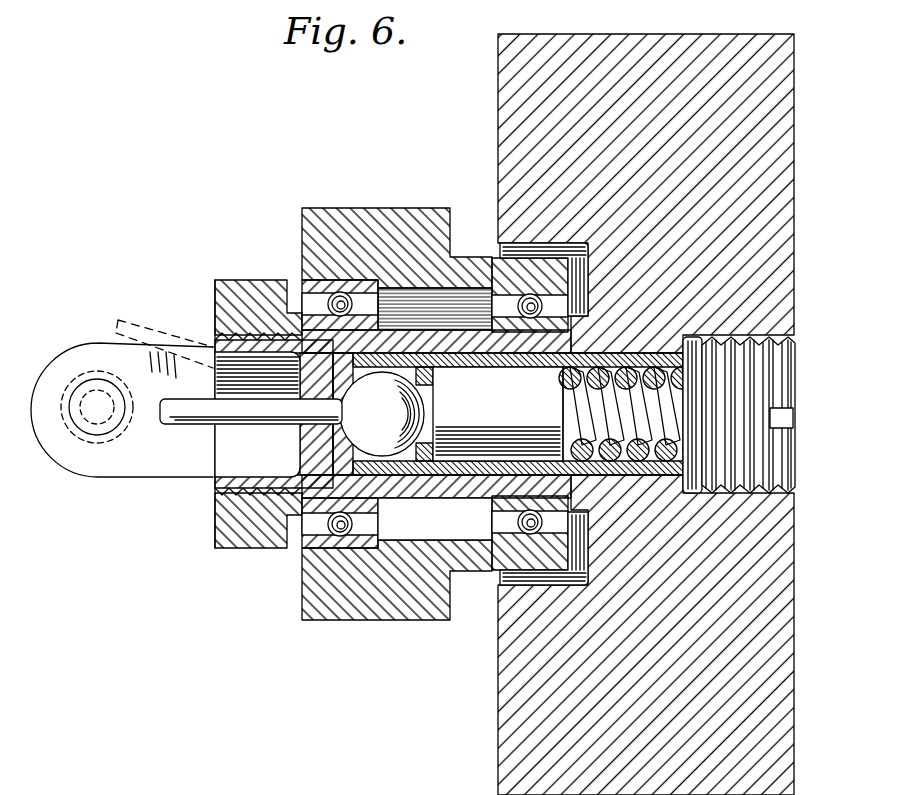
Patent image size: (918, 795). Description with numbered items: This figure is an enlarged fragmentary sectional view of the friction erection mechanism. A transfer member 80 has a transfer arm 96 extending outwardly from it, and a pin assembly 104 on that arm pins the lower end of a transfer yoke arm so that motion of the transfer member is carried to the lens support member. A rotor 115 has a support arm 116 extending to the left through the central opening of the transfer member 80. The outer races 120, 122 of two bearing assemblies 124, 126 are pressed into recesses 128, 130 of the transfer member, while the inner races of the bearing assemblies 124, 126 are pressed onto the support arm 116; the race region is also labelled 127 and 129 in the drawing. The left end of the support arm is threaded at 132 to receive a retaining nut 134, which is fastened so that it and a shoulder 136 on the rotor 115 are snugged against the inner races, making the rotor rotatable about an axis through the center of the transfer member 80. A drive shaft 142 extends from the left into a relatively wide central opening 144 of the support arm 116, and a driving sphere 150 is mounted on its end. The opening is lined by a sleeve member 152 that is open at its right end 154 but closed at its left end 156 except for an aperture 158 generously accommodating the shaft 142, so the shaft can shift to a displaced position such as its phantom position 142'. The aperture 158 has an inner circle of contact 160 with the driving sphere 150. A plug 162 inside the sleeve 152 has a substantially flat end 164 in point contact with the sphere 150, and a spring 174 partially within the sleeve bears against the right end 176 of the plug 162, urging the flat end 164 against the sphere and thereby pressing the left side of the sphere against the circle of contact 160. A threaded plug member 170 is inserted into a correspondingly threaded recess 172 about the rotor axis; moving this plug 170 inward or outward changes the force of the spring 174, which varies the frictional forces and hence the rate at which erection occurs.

The transfer member 80 is at (302, 588).
The transfer arm 96 is at (54, 455).
The pin assembly 104 is at (88, 434).
The rotor 115 is at (660, 42).
The support arm 116 is at (216, 488).
The outer race 120 is at (300, 283).
The outer race 122 is at (500, 246).
The bearing assembly 124 is at (298, 542).
The bearing assembly 126 is at (522, 318).
The race 127 is at (384, 515).
The recess 128 is at (395, 288).
The bearing race 129 is at (380, 316).
The recess 130 is at (494, 270).
The threaded portion 132 is at (214, 510).
The retaining nut 134 is at (252, 548).
The shoulder 136 is at (556, 367).
The drive shaft 142 is at (236, 431).
The phantom position of drive shaft 142' is at (164, 332).
The central opening 144 is at (218, 480).
The driving sphere 150 is at (425, 368).
The sleeve member 152 is at (418, 526).
The right end of sleeve 154 is at (630, 464).
The left end of sleeve 156 is at (334, 456).
The aperture 158 is at (335, 406).
The circle of contact 160 is at (336, 440).
The plug 162 is at (516, 416).
The flat end 164 is at (422, 425).
The threaded plug member 170 is at (784, 371).
The threaded recess 172 is at (783, 492).
The spring 174 is at (572, 400).
The right end of plug 176 is at (428, 386).